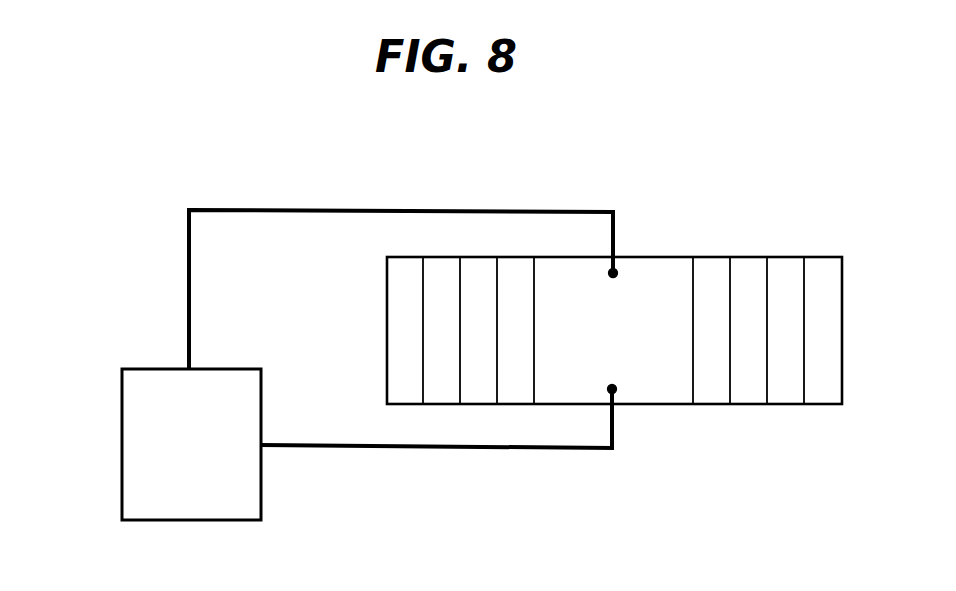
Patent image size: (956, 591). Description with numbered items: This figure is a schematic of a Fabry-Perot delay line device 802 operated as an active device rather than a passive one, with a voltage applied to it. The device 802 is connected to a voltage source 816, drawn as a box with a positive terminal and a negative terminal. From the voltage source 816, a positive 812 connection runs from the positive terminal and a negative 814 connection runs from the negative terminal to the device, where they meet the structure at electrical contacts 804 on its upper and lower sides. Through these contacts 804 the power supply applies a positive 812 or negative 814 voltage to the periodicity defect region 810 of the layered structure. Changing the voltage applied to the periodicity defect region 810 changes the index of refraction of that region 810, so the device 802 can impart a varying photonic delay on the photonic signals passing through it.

The Fabry-Perot delay line device 802 is at (764, 226).
The electrical contacts 804 is at (616, 273).
The periodicity defect region 810 is at (572, 258).
The positive voltage 812 is at (311, 208).
The negative voltage 814 is at (458, 448).
The voltage source 816 is at (122, 445).